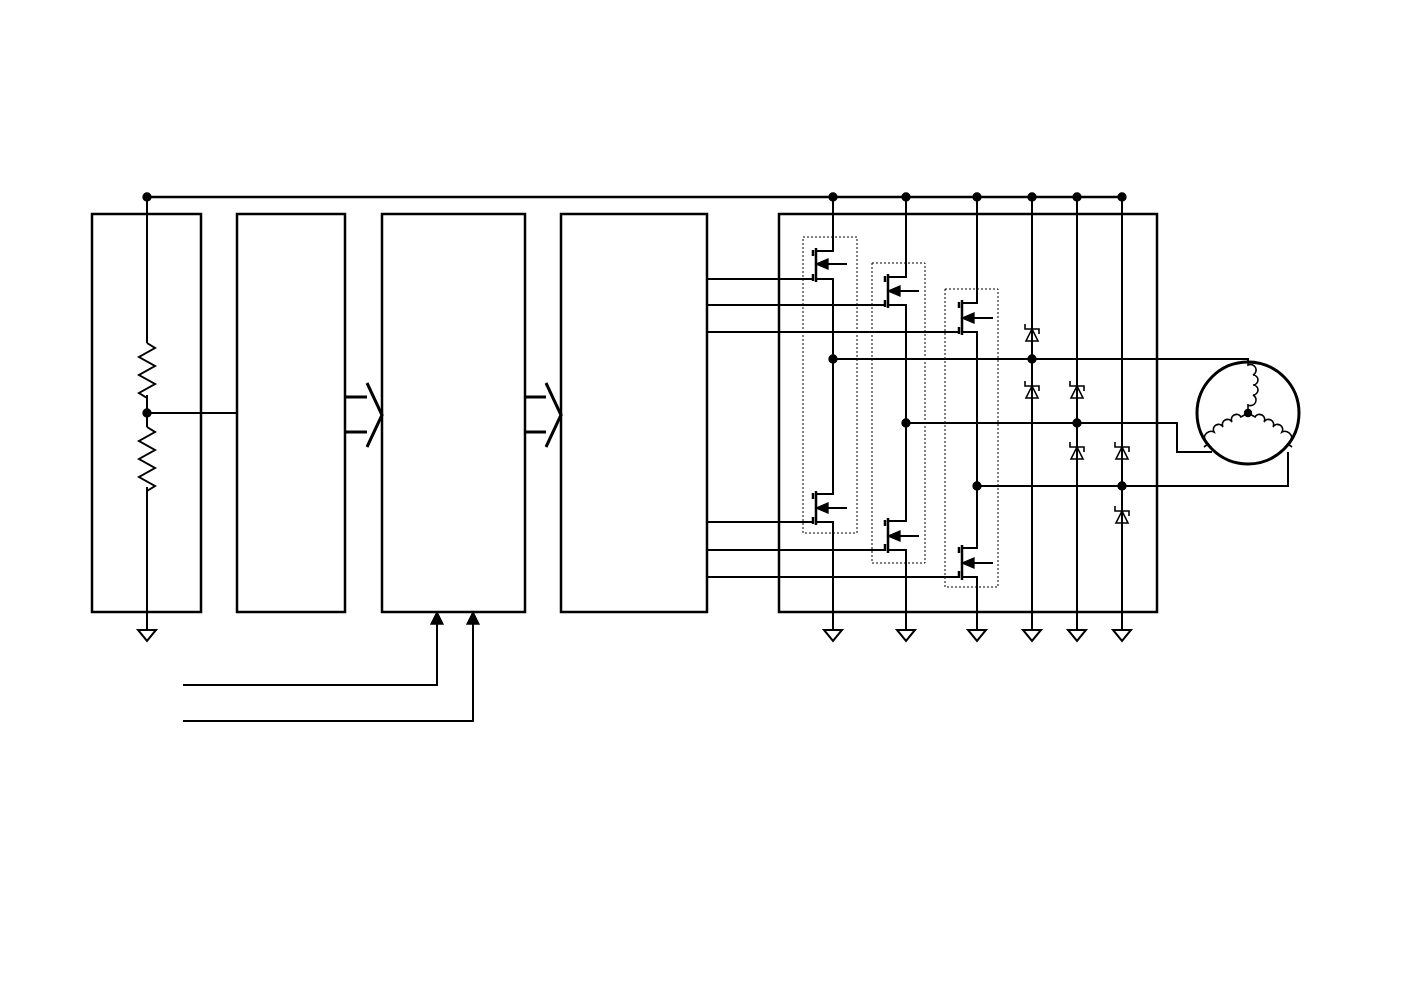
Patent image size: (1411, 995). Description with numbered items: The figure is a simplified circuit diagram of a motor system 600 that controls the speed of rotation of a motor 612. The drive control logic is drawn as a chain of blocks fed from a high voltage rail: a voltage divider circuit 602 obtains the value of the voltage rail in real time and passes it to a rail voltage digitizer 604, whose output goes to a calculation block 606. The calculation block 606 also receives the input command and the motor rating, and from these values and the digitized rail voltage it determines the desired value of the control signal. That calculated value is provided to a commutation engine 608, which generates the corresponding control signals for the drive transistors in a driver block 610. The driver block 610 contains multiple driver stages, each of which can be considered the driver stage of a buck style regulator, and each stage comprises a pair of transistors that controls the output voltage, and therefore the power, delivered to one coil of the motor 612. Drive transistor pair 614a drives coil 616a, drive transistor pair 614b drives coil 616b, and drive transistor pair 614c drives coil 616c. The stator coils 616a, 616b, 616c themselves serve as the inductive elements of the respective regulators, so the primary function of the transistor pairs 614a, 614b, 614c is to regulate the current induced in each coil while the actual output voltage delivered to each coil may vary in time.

The motor system 600 is at (1275, 118).
The voltage divider circuit 602 is at (193, 607).
The digitizer circuit 604 is at (337, 607).
The calculation block 606 is at (520, 607).
The commutation engine 608 is at (697, 607).
The driver block 610 is at (800, 613).
The motor 612 is at (1286, 418).
The drive transistor pair 614a is at (857, 237).
The drive transistor pair 614b is at (925, 263).
The drive transistor pair 614c is at (998, 289).
The coil 616a is at (1250, 386).
The coil 616b is at (1222, 432).
The coil 616c is at (1270, 424).